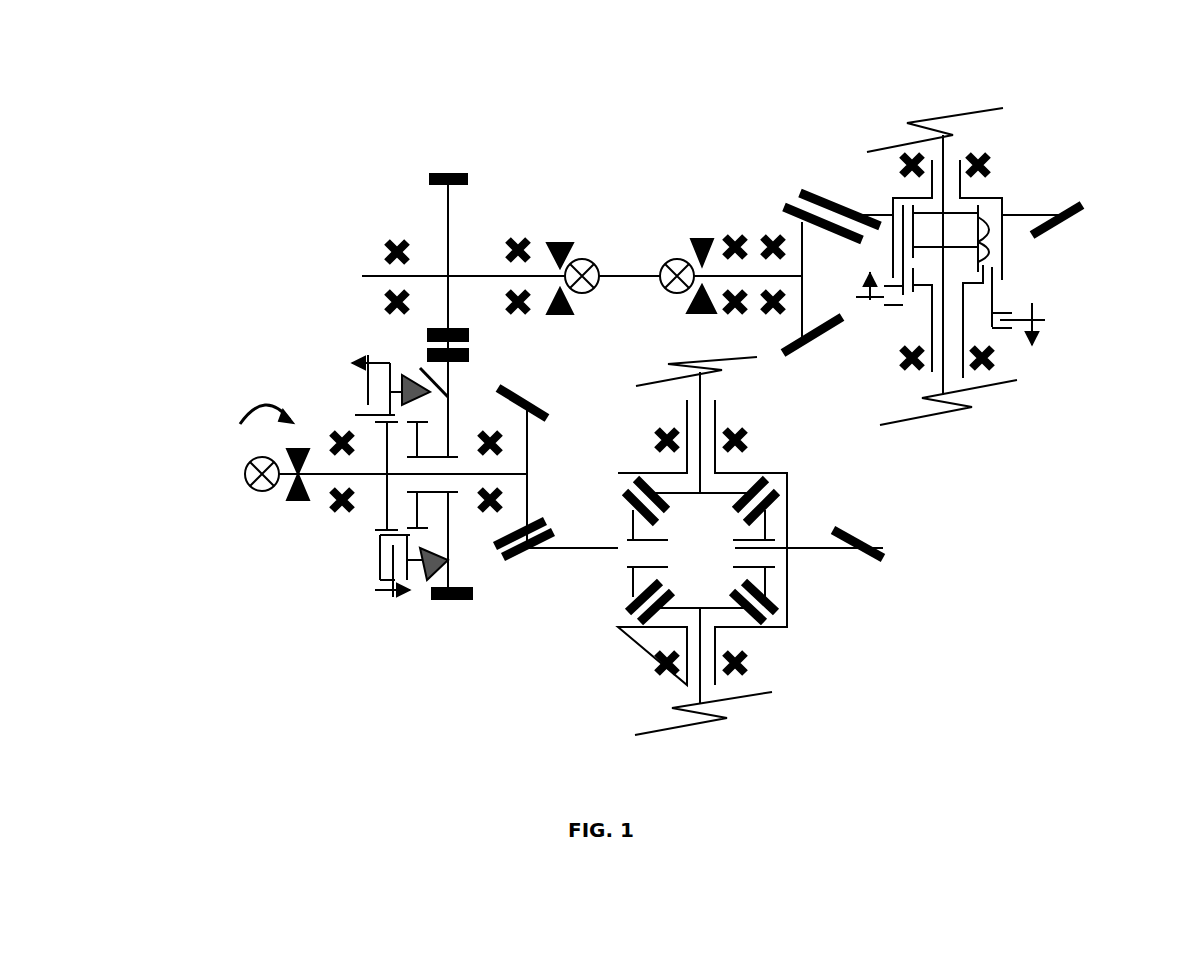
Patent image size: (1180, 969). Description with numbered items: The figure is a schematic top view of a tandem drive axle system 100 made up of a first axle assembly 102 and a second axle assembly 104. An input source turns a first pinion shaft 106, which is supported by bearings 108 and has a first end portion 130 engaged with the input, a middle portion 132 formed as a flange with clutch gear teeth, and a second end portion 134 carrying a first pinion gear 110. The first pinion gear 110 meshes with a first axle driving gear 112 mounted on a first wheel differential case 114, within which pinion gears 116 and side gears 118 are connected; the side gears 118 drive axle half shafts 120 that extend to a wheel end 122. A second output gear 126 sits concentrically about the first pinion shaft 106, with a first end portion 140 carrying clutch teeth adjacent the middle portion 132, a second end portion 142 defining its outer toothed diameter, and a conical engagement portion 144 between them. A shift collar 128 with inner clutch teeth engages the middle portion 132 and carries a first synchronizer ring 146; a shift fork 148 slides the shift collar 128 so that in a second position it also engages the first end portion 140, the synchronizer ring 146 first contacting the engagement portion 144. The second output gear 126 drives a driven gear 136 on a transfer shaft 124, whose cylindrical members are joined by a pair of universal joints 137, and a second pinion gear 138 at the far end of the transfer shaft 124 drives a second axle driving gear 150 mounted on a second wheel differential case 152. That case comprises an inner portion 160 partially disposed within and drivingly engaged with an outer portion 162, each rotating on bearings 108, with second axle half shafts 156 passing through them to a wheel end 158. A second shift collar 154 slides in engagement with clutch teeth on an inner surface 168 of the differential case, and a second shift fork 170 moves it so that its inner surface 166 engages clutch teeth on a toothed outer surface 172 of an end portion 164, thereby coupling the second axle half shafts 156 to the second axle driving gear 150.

The tandem drive axle system 100 is at (180, 136).
The first axle assembly 102 is at (420, 667).
The second axle assembly 104 is at (802, 145).
The first pinion shaft 106 is at (318, 484).
The bearings 108 is at (524, 242).
The first pinion gear 110 is at (530, 455).
The first axle driving gear 112 is at (820, 550).
The first wheel differential case 114 is at (787, 612).
The pinion gears 116 is at (740, 538).
The side gears 118 is at (665, 490).
The axle half shafts 120 is at (712, 407).
The wheel end 122 is at (722, 385).
The transfer shaft 124 is at (612, 268).
The second output gear 126 is at (453, 410).
The shift collar 128 is at (378, 560).
The first end portion 130 is at (257, 490).
The middle portion 132 is at (384, 505).
The second end portion 134 is at (512, 476).
The driven gear 136 is at (452, 222).
The universal joints 137 is at (586, 291).
The second pinion gear 138 is at (805, 303).
The first end portion 140 is at (425, 445).
The second end portion 142 is at (470, 603).
The engagement portion 144 is at (419, 368).
The first synchronizer ring 146 is at (428, 580).
The shift fork 148 is at (378, 583).
The second axle driving gear 150 is at (1040, 212).
The second wheel differential case 152 is at (1008, 258).
The second shift collar 154 is at (1003, 307).
The second axle half shafts 156 is at (962, 195).
The wheel end 158 is at (950, 143).
The inner portion 160 is at (932, 322).
The outer portion 162 is at (1000, 283).
The end portion 164 is at (918, 248).
The inner surface 166 is at (990, 352).
The inner surface 168 is at (891, 210).
The second shift fork 170 is at (1047, 322).
The toothed outer surface 172 is at (968, 246).